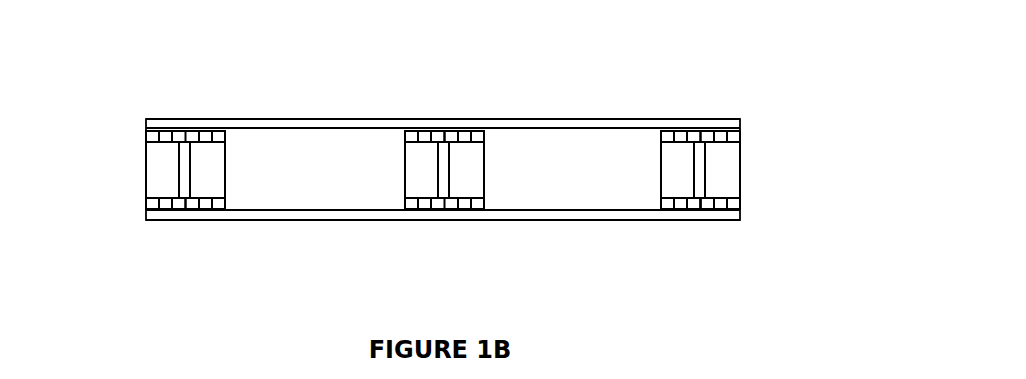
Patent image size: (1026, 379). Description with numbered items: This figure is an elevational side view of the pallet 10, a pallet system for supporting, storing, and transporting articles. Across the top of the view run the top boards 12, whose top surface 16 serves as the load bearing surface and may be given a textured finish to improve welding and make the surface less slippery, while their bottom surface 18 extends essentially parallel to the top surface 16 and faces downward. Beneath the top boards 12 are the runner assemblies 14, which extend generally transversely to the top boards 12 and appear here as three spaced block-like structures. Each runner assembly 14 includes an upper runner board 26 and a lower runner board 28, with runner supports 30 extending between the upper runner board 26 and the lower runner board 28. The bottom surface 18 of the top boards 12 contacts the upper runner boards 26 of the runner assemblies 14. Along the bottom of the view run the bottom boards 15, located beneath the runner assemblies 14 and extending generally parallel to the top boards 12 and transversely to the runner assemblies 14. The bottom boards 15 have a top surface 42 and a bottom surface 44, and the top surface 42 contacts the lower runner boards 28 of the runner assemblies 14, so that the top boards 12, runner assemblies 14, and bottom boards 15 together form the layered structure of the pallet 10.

The pallet 10 is at (454, 163).
The top boards 12 is at (710, 111).
The runner assemblies 14 is at (757, 164).
The bottom boards 15 is at (717, 225).
The top surface 16 is at (463, 119).
The bottom surface 18 is at (498, 129).
The upper runner board 26 is at (172, 135).
The lower runner board 28 is at (157, 203).
The runner supports 30 is at (160, 175).
The top surface 42 is at (586, 210).
The bottom surface 44 is at (515, 219).